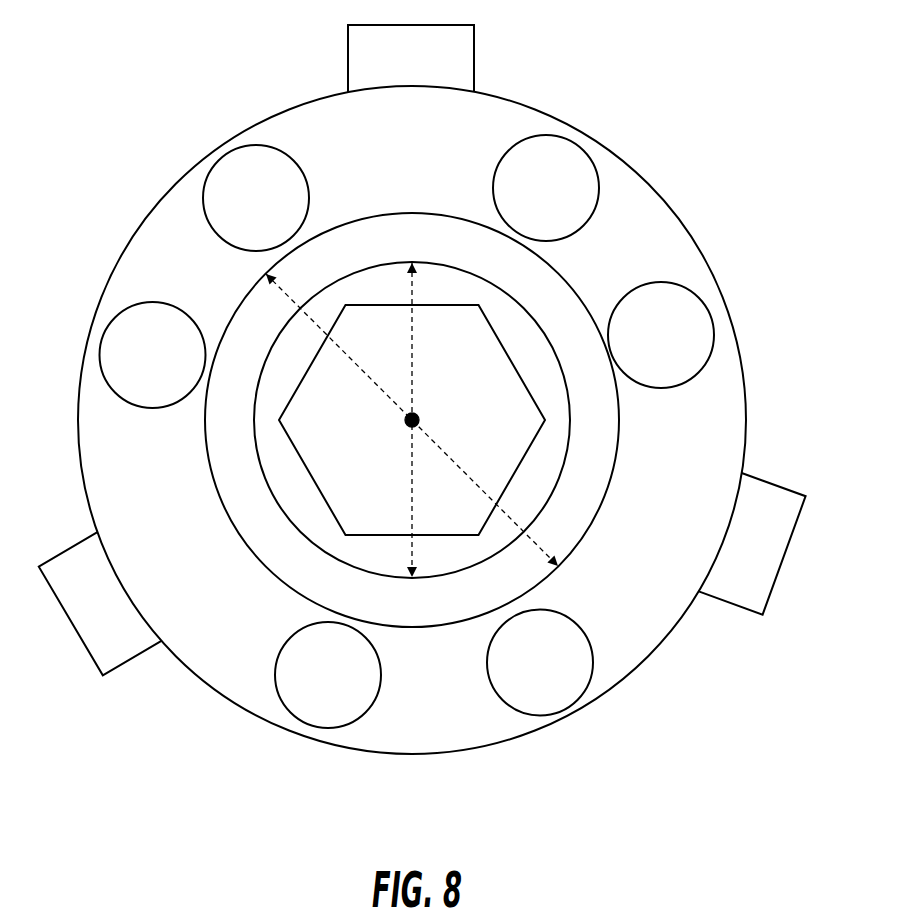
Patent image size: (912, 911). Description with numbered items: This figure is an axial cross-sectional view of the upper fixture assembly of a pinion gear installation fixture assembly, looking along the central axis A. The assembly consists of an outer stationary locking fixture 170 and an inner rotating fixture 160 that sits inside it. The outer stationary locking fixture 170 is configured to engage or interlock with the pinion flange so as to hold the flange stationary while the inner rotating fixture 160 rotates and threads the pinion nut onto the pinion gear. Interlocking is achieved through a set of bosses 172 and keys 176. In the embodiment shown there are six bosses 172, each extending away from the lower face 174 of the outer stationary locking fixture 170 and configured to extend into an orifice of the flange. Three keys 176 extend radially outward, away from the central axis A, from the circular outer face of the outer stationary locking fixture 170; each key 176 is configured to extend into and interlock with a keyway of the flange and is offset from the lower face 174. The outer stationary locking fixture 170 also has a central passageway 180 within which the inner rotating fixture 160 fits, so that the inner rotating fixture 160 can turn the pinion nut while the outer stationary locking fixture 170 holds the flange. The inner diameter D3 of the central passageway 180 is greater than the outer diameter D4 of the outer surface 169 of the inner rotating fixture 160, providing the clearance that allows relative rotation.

The inner rotating fixture 160 is at (297, 504).
The outer surface 169 is at (257, 447).
The outer stationary locking fixture 170 is at (414, 375).
The boss 172 is at (125, 367).
The lower face 174 is at (142, 275).
The key 176 is at (363, 55).
The central passageway 180 is at (443, 243).
The central axis A is at (420, 418).
The inner diameter D3 is at (368, 378).
The outer diameter D4 is at (405, 497).